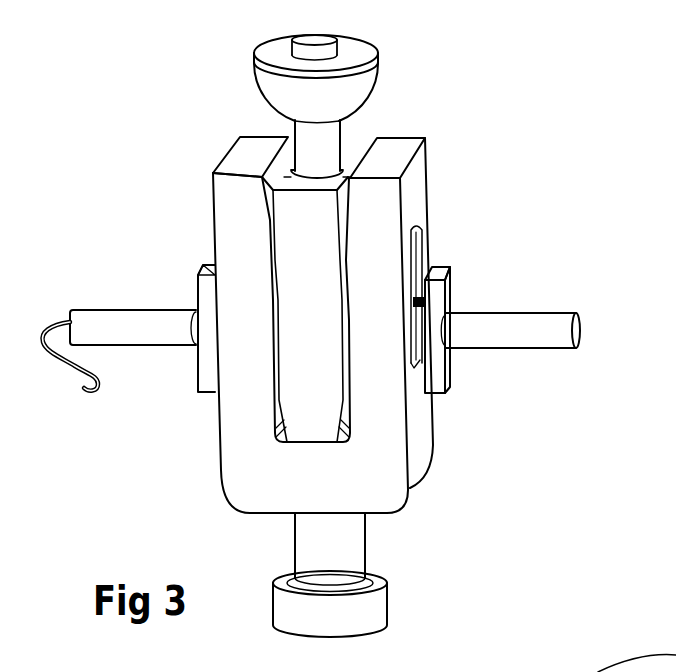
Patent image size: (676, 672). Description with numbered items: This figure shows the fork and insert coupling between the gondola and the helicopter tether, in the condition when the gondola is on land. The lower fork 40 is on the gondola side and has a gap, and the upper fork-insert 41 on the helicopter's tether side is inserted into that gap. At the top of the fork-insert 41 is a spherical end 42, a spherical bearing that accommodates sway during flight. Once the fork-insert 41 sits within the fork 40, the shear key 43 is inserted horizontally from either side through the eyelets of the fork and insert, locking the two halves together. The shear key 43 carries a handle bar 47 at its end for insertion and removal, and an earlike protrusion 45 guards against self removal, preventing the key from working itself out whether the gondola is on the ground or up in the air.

The fork of coupling 40 is at (415, 487).
The fork-insert of coupling 41 is at (345, 130).
The spherical end of fork-insert 42 is at (265, 70).
The shear key 43 is at (422, 307).
The earlike protrusion 45 is at (448, 270).
The handle bar of shear key 47 is at (553, 352).